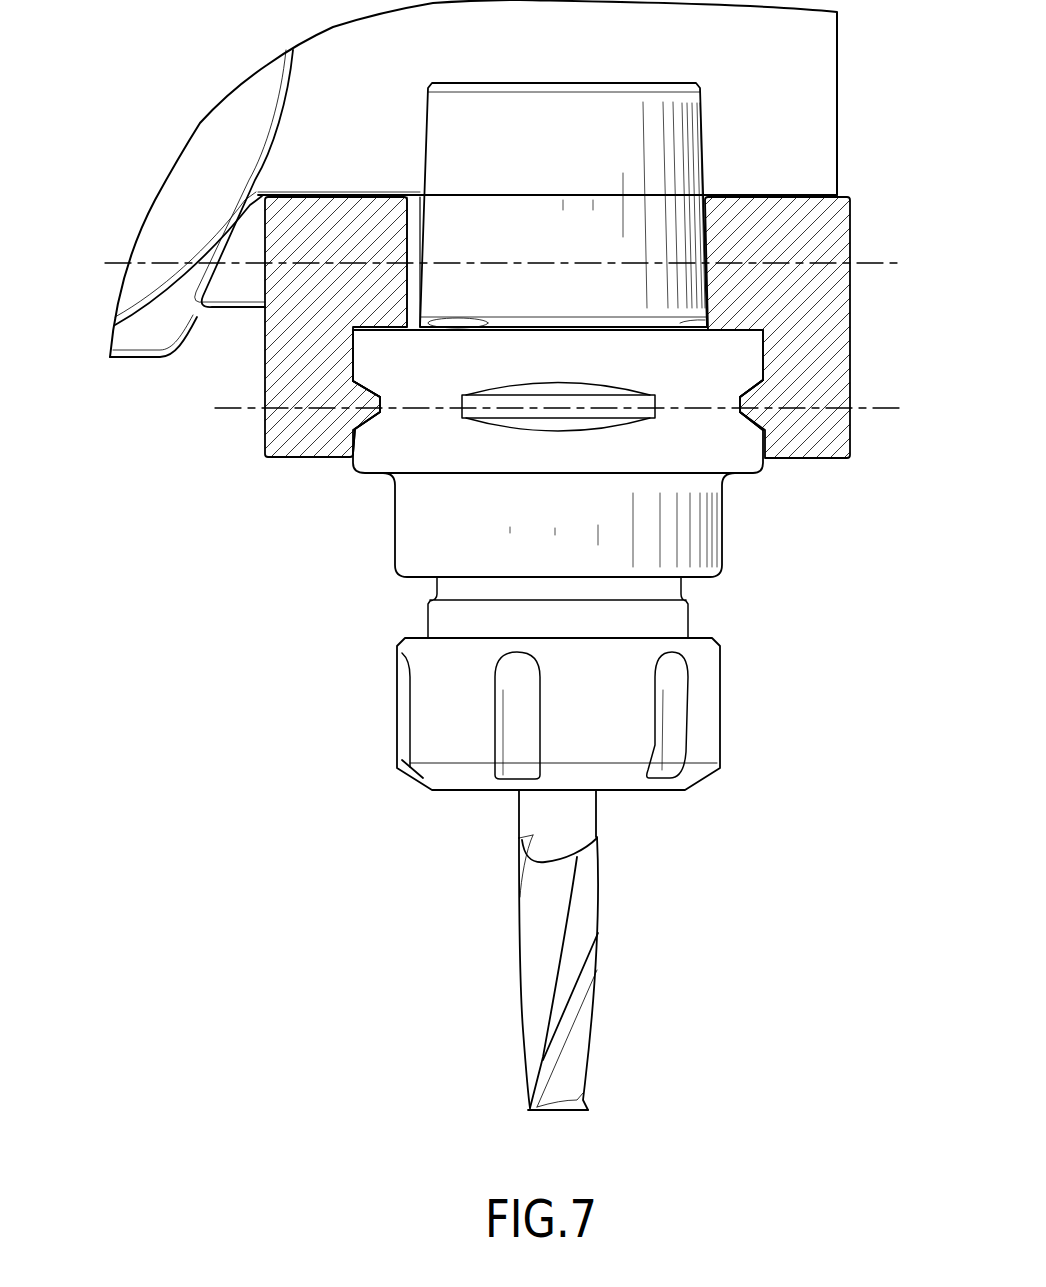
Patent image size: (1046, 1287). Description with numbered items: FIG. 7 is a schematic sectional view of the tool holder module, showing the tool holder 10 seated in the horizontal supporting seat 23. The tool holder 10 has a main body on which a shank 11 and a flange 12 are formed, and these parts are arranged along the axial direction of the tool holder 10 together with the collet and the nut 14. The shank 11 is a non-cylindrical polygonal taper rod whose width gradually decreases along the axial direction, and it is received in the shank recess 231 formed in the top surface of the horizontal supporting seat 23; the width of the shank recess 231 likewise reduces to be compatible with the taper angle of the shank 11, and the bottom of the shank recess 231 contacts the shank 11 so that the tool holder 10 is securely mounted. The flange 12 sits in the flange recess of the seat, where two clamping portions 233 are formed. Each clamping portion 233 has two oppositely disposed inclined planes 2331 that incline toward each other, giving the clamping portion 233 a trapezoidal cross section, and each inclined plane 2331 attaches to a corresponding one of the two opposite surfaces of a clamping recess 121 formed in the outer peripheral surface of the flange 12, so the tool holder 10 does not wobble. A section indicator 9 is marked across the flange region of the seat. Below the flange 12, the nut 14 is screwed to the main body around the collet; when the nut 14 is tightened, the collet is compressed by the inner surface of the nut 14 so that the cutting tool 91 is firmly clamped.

The section line 9 is at (177, 408).
The tool holder 10 is at (62, 263).
The shank 11 is at (680, 128).
The flange 12 is at (774, 351).
The clamping recess 121 is at (749, 394).
The nut 14 is at (705, 705).
The horizontal supporting seat 23 is at (809, 463).
The shank recess 231 is at (408, 238).
The clamping portion 233 is at (391, 423).
The inclined plane 2331 is at (364, 392).
The cutting tool 91 is at (582, 948).